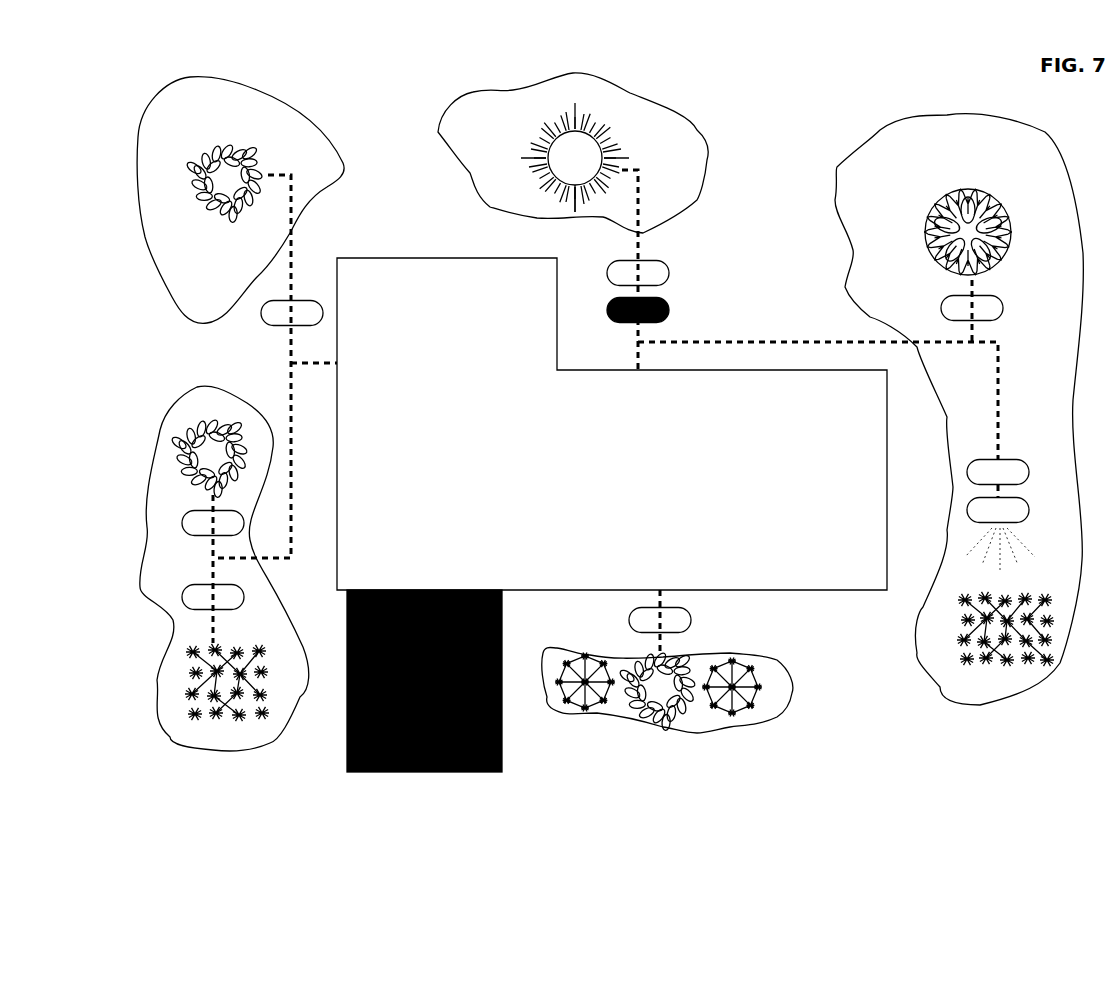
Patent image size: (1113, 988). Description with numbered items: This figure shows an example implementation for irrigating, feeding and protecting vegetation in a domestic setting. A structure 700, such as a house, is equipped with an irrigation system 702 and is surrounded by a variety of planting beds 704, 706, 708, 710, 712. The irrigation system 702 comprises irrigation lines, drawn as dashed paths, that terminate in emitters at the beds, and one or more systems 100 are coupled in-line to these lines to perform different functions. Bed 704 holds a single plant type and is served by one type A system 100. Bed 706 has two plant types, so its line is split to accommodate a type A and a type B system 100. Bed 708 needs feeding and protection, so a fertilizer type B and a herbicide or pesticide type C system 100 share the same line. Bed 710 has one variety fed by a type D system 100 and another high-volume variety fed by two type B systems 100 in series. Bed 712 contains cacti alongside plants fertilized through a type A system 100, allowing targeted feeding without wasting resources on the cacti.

The system 100 is at (268, 330).
The structure 700 is at (612, 515).
The irrigation system 702 is at (290, 222).
The bed 704 is at (240, 200).
The bed 706 is at (224, 568).
The bed 708 is at (573, 221).
The bed 710 is at (860, 409).
The bed 712 is at (667, 668).